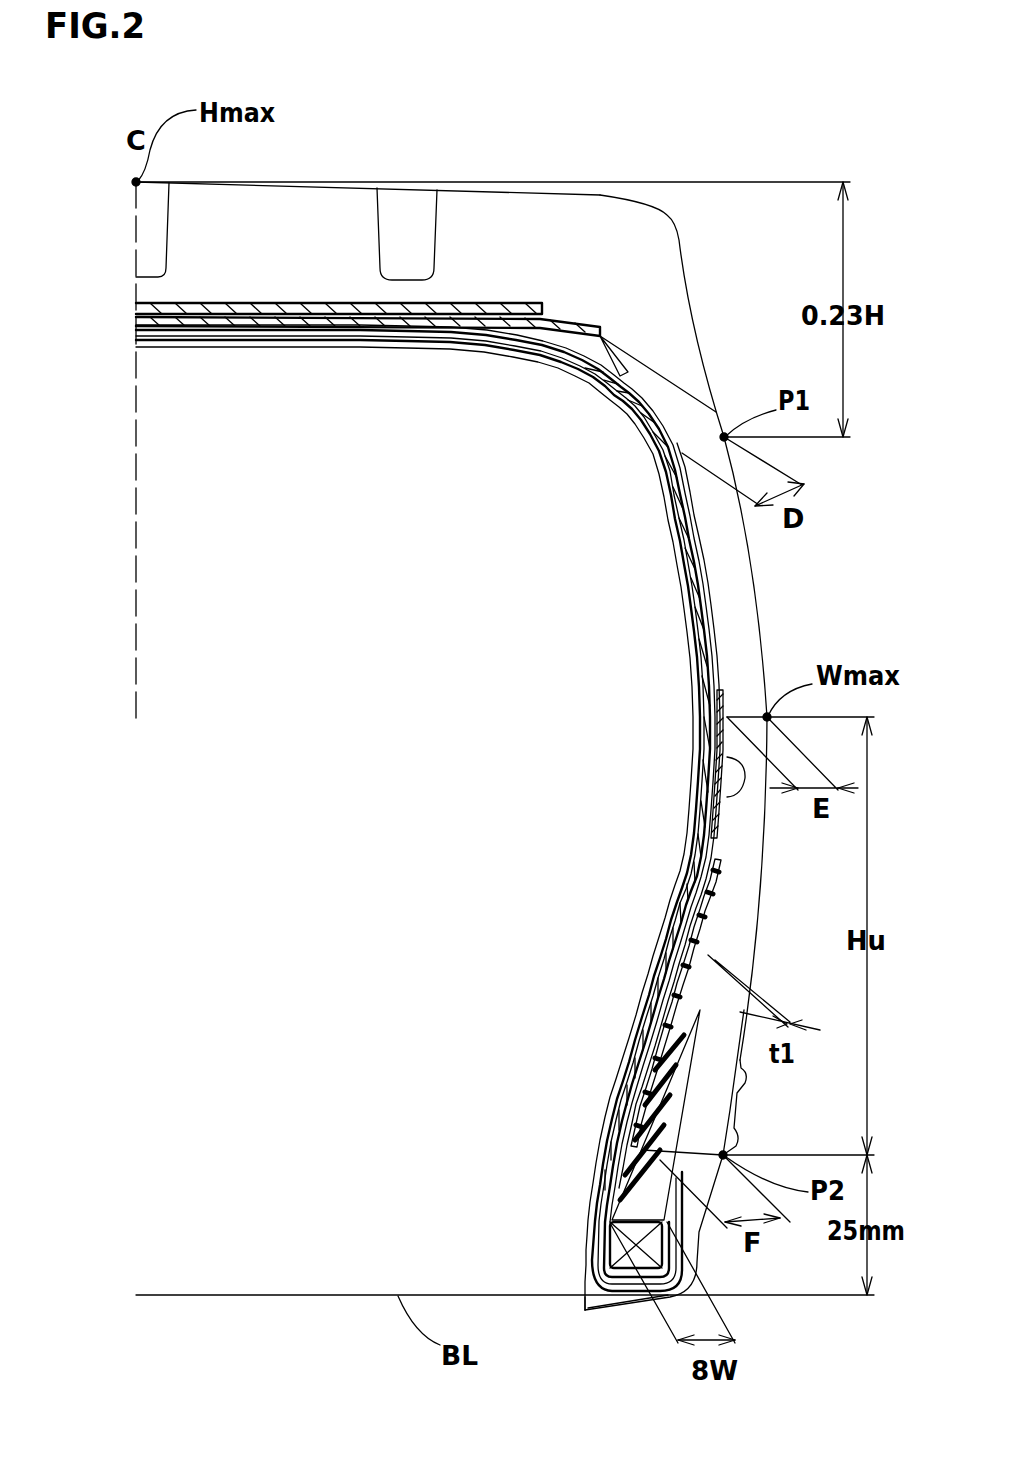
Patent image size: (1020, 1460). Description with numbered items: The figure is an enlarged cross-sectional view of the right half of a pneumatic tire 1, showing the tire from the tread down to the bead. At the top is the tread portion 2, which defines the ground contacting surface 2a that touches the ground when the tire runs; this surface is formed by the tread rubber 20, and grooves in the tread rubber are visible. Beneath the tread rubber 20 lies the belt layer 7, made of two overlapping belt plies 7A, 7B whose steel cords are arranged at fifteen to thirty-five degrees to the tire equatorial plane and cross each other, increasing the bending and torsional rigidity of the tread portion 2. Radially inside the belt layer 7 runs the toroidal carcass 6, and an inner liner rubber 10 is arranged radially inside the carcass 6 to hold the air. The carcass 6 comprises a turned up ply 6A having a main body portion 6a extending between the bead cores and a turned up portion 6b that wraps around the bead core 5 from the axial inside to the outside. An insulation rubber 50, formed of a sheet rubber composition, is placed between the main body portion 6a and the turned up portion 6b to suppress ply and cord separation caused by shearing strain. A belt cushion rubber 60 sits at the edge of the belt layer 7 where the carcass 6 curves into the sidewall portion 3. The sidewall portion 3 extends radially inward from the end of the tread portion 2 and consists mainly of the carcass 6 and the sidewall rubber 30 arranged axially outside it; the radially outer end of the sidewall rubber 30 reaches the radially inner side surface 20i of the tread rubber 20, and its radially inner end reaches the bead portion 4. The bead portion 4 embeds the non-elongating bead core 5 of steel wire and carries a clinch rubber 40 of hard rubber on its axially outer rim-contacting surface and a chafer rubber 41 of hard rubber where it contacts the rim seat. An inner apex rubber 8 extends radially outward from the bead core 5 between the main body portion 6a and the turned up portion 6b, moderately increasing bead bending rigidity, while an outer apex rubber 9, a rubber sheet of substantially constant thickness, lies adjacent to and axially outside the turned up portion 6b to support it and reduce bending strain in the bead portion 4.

The pneumatic tire 1 is at (756, 164).
The tread portion 2 is at (617, 187).
The ground contacting surface 2a is at (314, 182).
The tread rubber 20 is at (650, 272).
The radially inner side surface of tread rubber 20i is at (676, 381).
The belt layer 7 is at (309, 324).
The belt ply 7A is at (150, 322).
The belt ply 7B is at (150, 308).
The inner liner rubber 10 is at (250, 347).
The carcass 6 is at (682, 926).
The turned up ply 6A is at (440, 804).
The main body portion 6a is at (702, 682).
The turned up portion 6b is at (692, 797).
The insulation rubber 50 is at (722, 650).
The belt cushion rubber 60 is at (603, 340).
The outer apex rubber 9 is at (722, 913).
The sidewall portion 3 is at (784, 540).
The sidewall rubber 30 is at (735, 580).
The clinch rubber 40 is at (700, 1116).
The bead portion 4 is at (714, 1250).
The chafer rubber 41 is at (632, 1292).
The bead core 5 is at (612, 1243).
The inner apex rubber 8 is at (640, 1176).